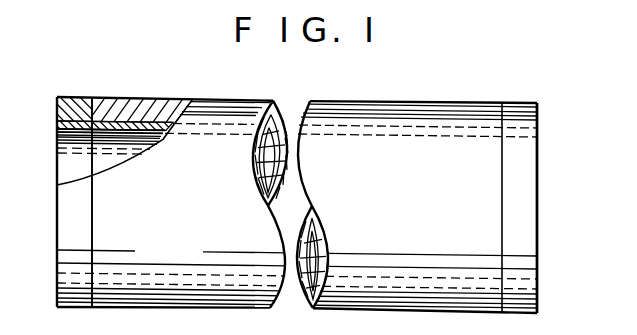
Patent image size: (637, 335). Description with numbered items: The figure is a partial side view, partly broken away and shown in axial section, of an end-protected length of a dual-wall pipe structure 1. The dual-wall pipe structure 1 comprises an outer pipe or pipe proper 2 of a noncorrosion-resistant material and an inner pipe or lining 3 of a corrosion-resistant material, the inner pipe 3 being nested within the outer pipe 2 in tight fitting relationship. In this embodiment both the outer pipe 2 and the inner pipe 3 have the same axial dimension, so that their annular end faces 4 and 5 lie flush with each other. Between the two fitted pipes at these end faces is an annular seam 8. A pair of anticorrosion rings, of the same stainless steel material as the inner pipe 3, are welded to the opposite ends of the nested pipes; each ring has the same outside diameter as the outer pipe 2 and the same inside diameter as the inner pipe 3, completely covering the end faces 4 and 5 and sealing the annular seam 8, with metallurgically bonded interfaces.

The dual-wall pipe structure 1 is at (384, 95).
The outer pipe 2 is at (156, 105).
The inner pipe 3 is at (161, 134).
The annular end face 4 is at (85, 96).
The annular end face 5 is at (88, 127).
The annular seam 8 is at (88, 121).